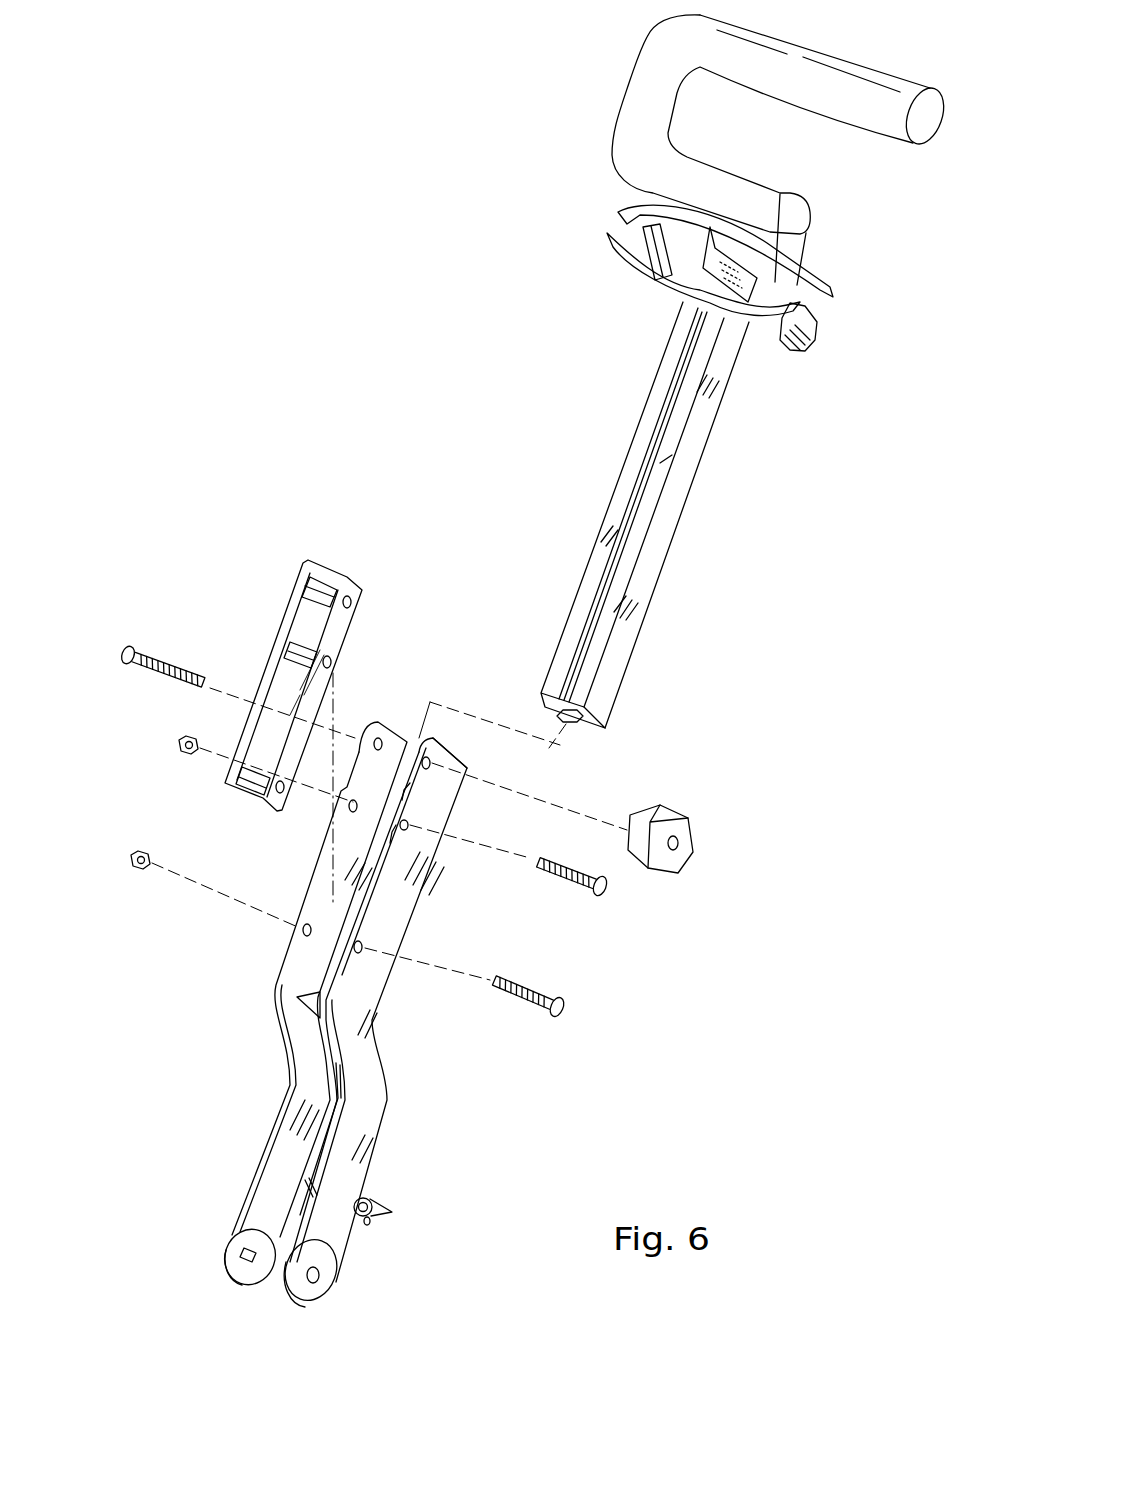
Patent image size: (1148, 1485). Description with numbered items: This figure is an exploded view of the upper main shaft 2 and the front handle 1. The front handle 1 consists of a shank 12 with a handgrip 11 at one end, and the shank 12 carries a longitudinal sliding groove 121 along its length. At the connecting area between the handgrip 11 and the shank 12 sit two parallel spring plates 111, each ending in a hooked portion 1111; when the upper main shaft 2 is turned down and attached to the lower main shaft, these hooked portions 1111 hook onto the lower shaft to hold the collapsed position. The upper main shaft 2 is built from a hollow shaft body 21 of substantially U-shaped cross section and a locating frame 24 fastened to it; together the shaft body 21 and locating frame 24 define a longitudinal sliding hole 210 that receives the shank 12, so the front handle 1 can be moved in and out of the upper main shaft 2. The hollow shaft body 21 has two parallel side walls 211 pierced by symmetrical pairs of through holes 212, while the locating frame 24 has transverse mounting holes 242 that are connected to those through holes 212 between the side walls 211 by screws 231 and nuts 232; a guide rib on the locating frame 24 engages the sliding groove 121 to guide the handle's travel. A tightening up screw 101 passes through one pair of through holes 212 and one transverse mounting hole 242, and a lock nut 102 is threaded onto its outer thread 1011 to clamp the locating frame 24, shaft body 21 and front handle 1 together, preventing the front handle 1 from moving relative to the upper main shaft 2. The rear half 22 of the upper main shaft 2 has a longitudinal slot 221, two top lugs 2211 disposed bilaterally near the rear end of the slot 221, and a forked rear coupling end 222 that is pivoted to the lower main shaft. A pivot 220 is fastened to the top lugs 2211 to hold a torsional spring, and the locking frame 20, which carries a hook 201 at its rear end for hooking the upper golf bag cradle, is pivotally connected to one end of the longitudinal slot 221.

The front handle 1 is at (622, 437).
The handgrip 11 is at (617, 133).
The spring plate 111 is at (670, 272).
The hooked portion 1111 is at (700, 243).
The shank 12 is at (604, 525).
The longitudinal sliding groove 121 is at (604, 585).
The tightening up screw 101 is at (128, 648).
The outer thread 1011 is at (161, 676).
The lock nut 102 is at (663, 815).
The upper main shaft 2 is at (263, 1040).
The locking frame 20 is at (330, 1150).
The hollow shaft body 21 is at (458, 797).
The longitudinal sliding hole 210 is at (393, 743).
The side wall 211 is at (320, 900).
The through hole 212 is at (377, 740).
The rear half 22 is at (253, 1180).
The pivot 220 is at (370, 1202).
The hook 201 is at (387, 1217).
The top lug 2211 is at (367, 1227).
The longitudinal slot 221 is at (337, 1097).
The forked rear coupling end 222 is at (230, 1240).
The screw 231 is at (610, 887).
The nut 232 is at (180, 750).
The locating frame 24 is at (290, 610).
The transverse mounting hole 242 is at (283, 795).